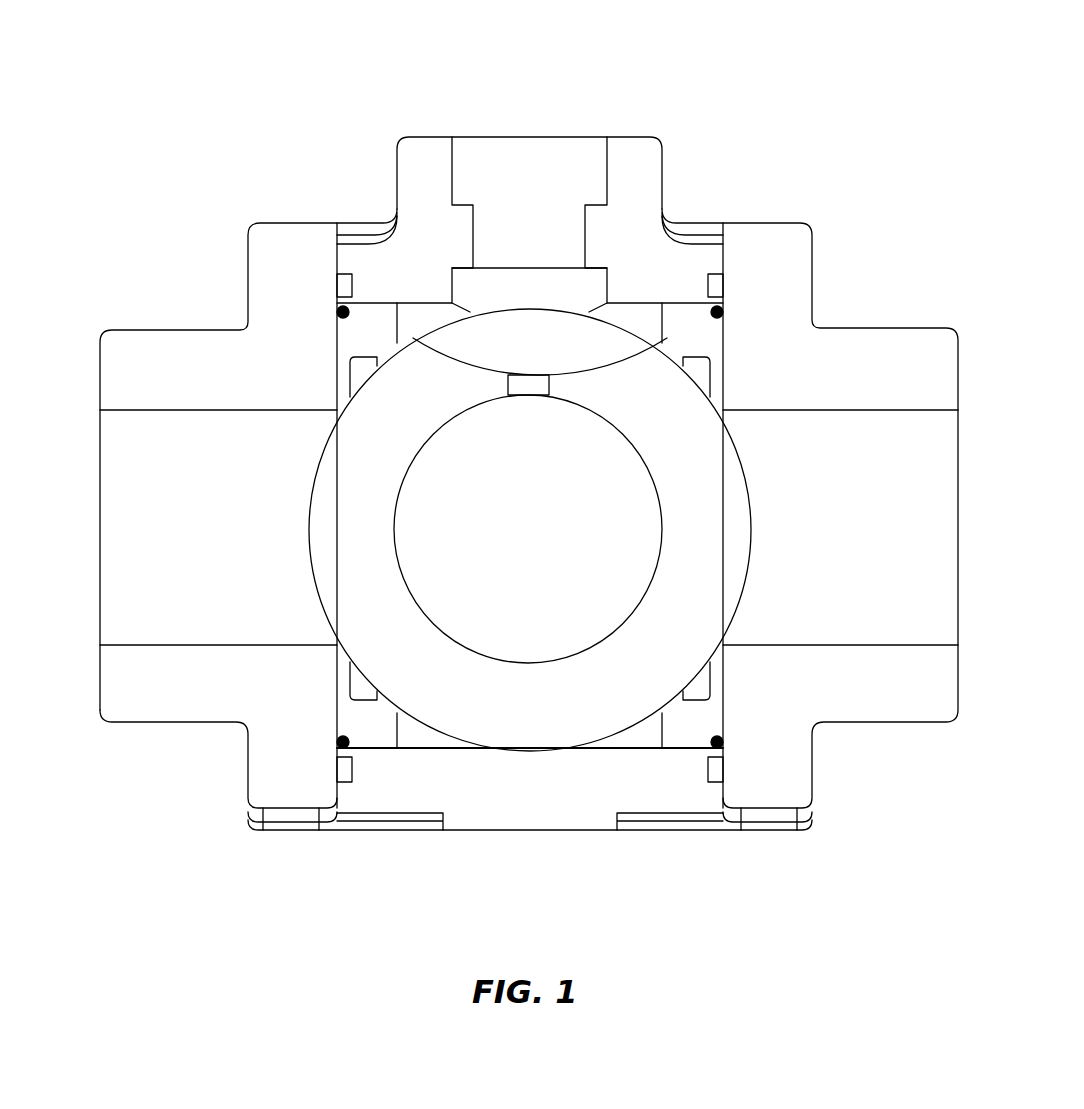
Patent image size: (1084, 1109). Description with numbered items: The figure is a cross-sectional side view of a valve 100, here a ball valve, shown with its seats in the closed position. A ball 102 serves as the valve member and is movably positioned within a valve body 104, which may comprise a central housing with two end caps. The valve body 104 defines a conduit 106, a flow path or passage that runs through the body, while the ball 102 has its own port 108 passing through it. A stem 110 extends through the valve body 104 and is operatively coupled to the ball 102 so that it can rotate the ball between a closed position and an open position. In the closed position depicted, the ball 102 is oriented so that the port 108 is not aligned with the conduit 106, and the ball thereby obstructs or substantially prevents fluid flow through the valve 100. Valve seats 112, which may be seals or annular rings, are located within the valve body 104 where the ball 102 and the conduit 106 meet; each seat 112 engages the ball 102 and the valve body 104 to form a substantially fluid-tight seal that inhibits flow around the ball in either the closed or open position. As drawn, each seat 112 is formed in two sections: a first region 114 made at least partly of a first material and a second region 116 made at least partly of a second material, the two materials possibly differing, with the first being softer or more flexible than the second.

The valve 100 is at (812, 168).
The ball 102 is at (435, 698).
The valve body 104 is at (213, 705).
The conduit 106 is at (133, 477).
The port 108 is at (540, 627).
The stem 110 is at (510, 168).
The valve seat 112 is at (358, 332).
The first region 114 is at (705, 720).
The second region 116 is at (658, 718).